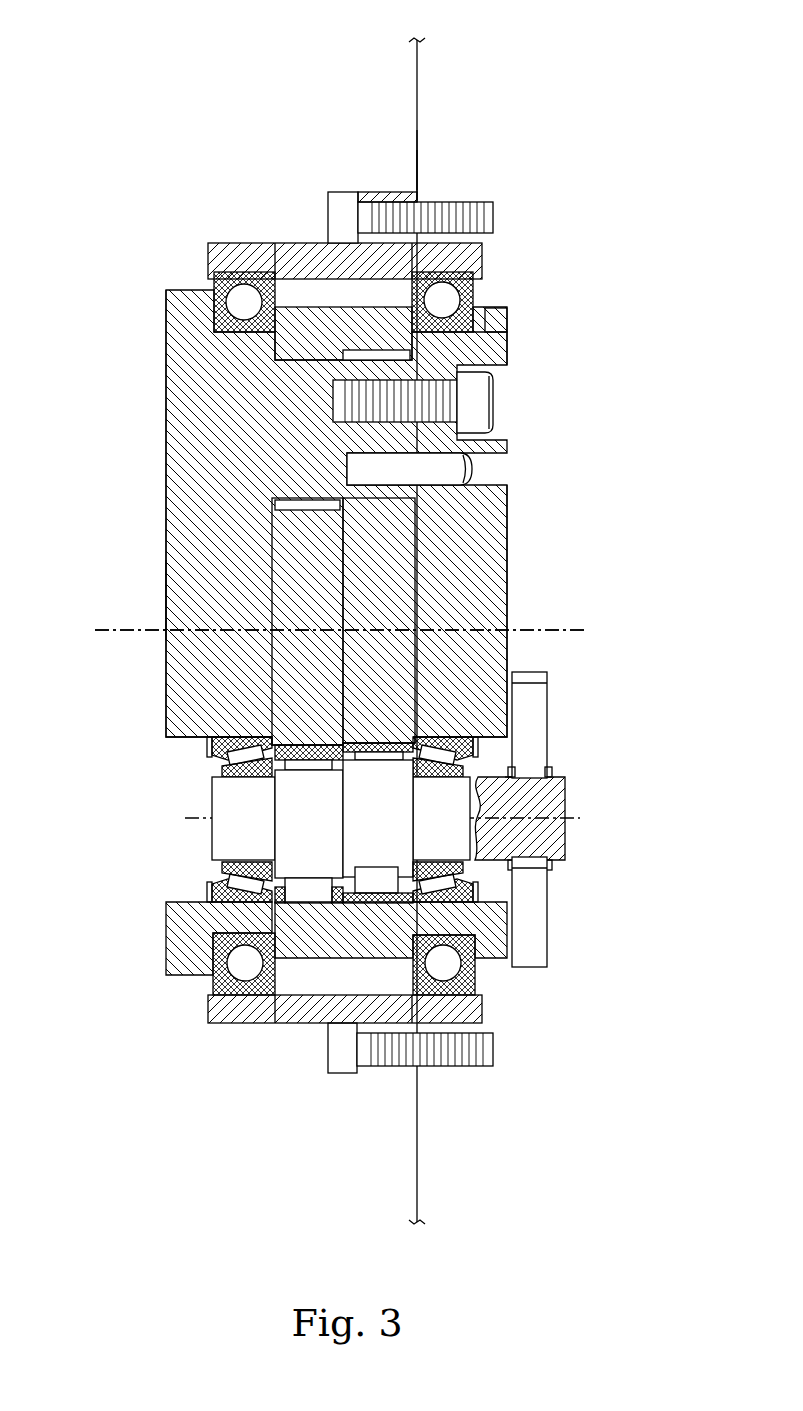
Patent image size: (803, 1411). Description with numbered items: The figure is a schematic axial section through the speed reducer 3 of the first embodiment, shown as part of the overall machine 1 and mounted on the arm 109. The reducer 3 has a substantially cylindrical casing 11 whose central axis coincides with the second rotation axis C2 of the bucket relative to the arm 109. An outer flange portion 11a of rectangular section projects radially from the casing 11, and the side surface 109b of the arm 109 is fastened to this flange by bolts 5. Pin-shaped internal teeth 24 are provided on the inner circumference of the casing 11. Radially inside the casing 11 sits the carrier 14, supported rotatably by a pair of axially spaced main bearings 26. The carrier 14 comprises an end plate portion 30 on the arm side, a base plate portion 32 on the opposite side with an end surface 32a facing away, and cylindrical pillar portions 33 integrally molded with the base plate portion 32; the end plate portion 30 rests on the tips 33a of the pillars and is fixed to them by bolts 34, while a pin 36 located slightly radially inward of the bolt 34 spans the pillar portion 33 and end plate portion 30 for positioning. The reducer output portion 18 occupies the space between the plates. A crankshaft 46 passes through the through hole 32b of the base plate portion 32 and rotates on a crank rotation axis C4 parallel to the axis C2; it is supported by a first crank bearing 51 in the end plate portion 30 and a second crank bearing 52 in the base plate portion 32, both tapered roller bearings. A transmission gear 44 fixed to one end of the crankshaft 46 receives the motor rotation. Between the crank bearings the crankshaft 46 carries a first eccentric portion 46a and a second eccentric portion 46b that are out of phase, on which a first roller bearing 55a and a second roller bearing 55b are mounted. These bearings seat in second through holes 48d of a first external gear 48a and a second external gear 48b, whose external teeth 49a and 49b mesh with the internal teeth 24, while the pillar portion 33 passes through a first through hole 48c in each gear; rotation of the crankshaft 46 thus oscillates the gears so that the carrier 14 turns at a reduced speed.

The bicycle component / assembly 1 is at (207, 138).
The arm 109 is at (413, 82).
The axis 109b is at (414, 186).
The casing 11 is at (243, 243).
The outer flange portion 11a is at (385, 192).
The bolts 5 is at (328, 206).
The internal teeth 24 is at (212, 262).
The speed reducer 3 is at (500, 256).
The external teeth 49b is at (242, 298).
The external teeth 49a is at (440, 300).
The pillar portion 33 is at (503, 339).
The tips 33a is at (507, 356).
The carrier 14 is at (165, 391).
The bolts 34 is at (497, 398).
The first through hole 48c is at (330, 492).
The pin 36 is at (440, 490).
The base plate portion 32 is at (170, 552).
The end plate portion 30 is at (500, 562).
The end surface 32a is at (165, 599).
The second rotation axis C2 is at (585, 628).
The second eccentric portion 46b is at (240, 737).
The first eccentric portion 46a is at (515, 709).
The transmission gear 44 is at (542, 723).
The second crank bearing 52 is at (212, 746).
The first crank bearing 51 is at (462, 752).
The crank rotation axis C4 is at (575, 815).
The crankshaft 46 is at (222, 838).
The through hole 32b is at (198, 900).
The second through holes 48d is at (465, 869).
The reducer output portion 18 is at (556, 924).
The main bearings 26 is at (244, 965).
The second roller bearing 55b is at (330, 890).
The second external gear 48b is at (345, 882).
The first roller bearing 55a is at (398, 1032).
The first external gear 48a is at (378, 1066).